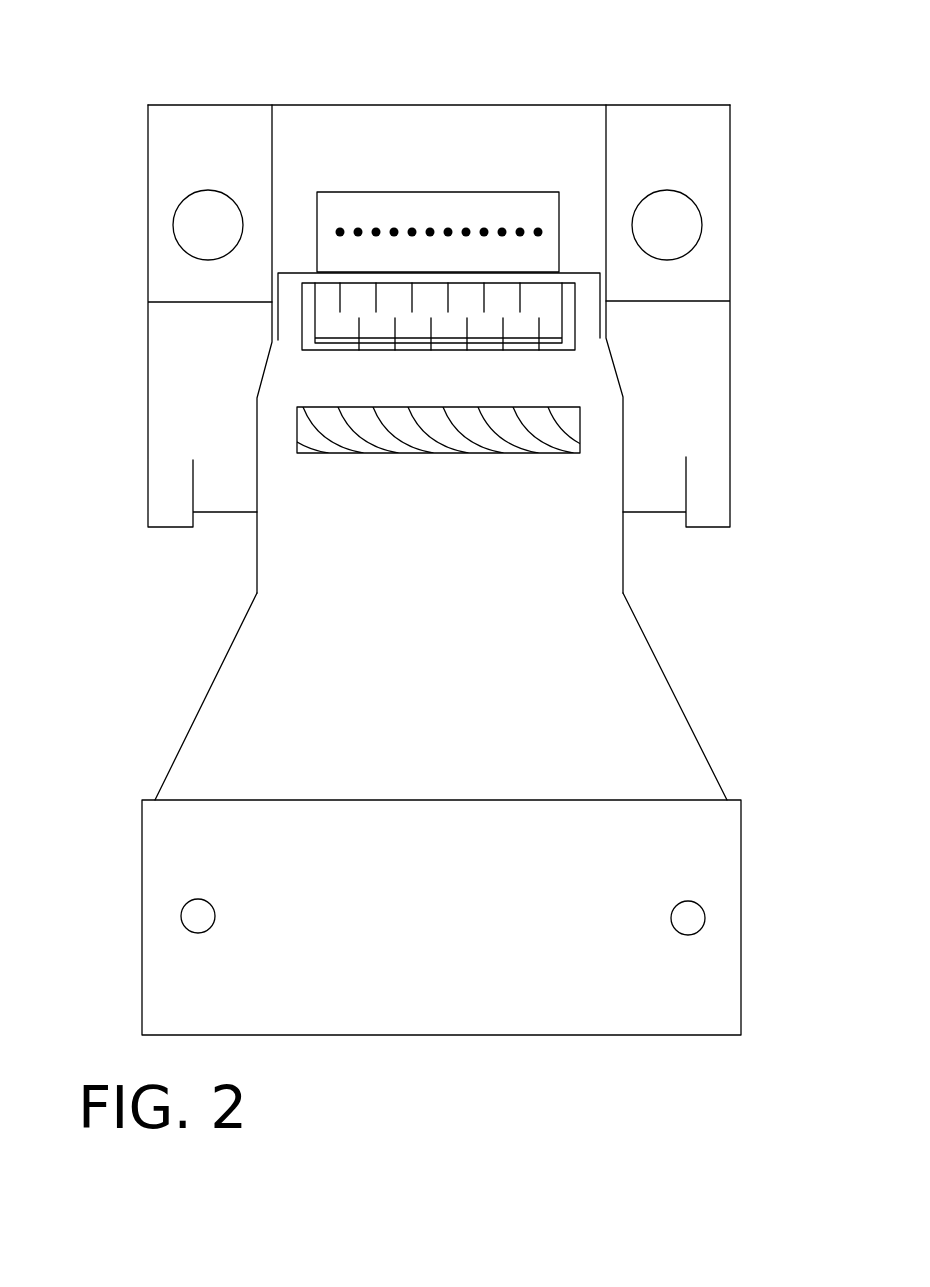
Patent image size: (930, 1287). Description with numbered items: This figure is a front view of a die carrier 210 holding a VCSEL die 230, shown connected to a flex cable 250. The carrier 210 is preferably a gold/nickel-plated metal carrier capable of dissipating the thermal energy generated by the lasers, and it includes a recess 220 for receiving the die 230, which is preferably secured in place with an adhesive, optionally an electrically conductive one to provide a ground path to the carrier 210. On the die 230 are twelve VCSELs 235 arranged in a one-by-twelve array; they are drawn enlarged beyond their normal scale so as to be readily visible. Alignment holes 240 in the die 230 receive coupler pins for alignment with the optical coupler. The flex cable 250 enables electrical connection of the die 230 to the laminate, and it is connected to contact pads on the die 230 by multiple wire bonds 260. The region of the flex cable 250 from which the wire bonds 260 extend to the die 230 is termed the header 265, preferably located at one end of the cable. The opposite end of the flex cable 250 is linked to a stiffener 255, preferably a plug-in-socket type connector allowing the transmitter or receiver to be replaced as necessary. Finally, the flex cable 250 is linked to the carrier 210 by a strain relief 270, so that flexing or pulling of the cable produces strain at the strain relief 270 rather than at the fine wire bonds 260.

The die carrier 210 is at (705, 382).
The recess 220 is at (298, 150).
The VCSEL die 230 is at (445, 192).
The VCSELs 235 is at (410, 228).
The alignment holes 240 is at (196, 229).
The flex cable 250 is at (475, 725).
The stiffener 255 is at (475, 940).
The wire bonds 260 is at (339, 314).
The header 265 is at (587, 322).
The strain relief 270 is at (318, 437).